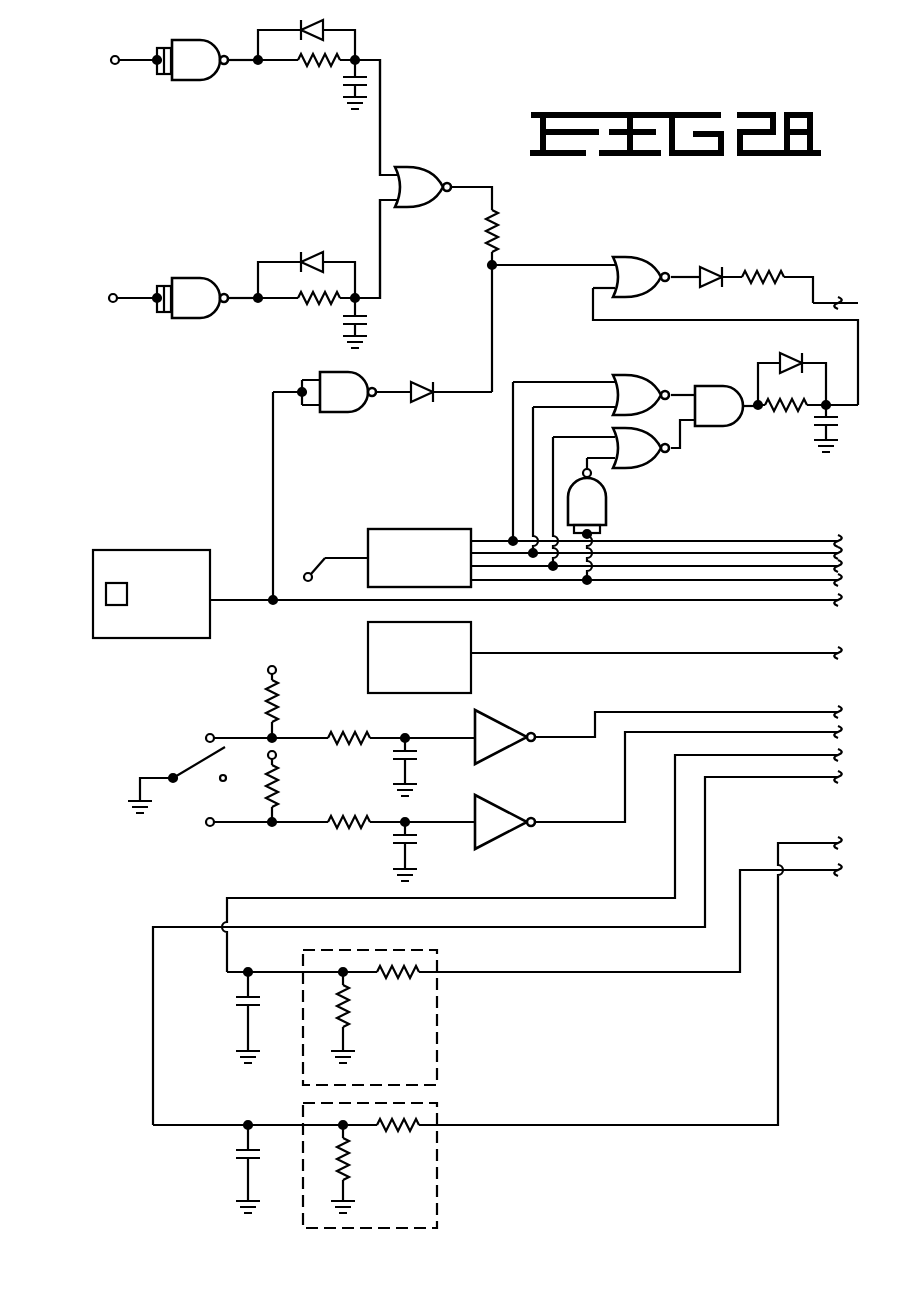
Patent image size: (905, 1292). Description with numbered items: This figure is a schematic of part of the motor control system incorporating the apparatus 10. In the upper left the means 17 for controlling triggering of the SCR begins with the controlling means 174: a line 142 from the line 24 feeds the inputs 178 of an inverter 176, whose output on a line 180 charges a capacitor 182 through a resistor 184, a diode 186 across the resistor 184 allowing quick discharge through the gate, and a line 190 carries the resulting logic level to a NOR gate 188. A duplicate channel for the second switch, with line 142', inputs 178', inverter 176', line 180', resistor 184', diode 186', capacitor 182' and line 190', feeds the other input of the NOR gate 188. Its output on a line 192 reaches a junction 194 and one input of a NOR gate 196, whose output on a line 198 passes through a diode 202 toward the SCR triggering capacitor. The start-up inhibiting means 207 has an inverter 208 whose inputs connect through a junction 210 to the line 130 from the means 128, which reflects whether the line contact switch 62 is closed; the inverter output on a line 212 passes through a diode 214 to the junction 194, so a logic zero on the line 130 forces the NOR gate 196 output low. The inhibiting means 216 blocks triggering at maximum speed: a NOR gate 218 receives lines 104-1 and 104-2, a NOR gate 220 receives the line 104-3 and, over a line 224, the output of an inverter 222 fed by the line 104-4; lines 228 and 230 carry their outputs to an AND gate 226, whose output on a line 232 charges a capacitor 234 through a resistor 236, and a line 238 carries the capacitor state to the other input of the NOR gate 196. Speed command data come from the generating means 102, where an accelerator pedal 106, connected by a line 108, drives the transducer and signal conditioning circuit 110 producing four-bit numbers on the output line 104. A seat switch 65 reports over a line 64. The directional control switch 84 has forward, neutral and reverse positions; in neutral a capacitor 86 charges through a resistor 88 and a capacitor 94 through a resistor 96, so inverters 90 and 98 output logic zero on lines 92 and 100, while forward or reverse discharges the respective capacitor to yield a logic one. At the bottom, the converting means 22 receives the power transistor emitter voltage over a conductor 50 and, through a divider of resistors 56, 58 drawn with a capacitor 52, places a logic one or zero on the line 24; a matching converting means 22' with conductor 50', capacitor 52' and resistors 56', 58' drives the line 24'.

The apparatus 10 is at (502, 96).
The controlling means 174 is at (176, 150).
The line 142 is at (123, 39).
The inputs 178 is at (186, 42).
The inverter 176 is at (221, 45).
The line 180 is at (234, 85).
The resistor 184 is at (339, 51).
The diode 186 is at (339, 34).
The capacitor 182 is at (318, 90).
The line 190 is at (403, 117).
The line 142' is at (123, 278).
The inputs 178' is at (185, 275).
The inverter 176' is at (217, 285).
The output line 180' is at (233, 324).
The resistor 184' is at (306, 321).
The diode 186' is at (306, 253).
The capacitor 182' is at (394, 323).
The line 190' is at (410, 249).
The NOR gate 188 is at (426, 168).
The line 192 is at (494, 190).
The junction 194 is at (494, 264).
The means 17 is at (652, 206).
The NOR gate 196 is at (632, 258).
The line 198 is at (686, 276).
The diode 202 is at (724, 276).
The inhibiting means 216 is at (574, 337).
The NOR gate 218 is at (628, 374).
The line 228 is at (680, 392).
The NOR gate 220 is at (634, 468).
The line 230 is at (682, 452).
The AND gate 226 is at (712, 386).
The line 232 is at (742, 418).
The resistor 236 is at (786, 410).
The line 238 is at (706, 322).
The capacitor 234 is at (831, 434).
The line 224 is at (598, 462).
The inverter 222 is at (605, 529).
The inhibiting means 207 is at (262, 386).
The inverter 208 is at (346, 413).
The line 212 is at (388, 390).
The diode 214 is at (424, 406).
The junction 210 is at (276, 596).
The means 128 is at (152, 534).
The line contact switch 62 is at (118, 583).
The line 130 is at (246, 598).
The generating means 102 is at (415, 524).
The accelerator box or transducer and signal conditioning circuit 110 is at (436, 528).
The accelerator pedal 106 is at (330, 545).
The line 108 is at (350, 556).
The output line 104 is at (713, 541).
The line 104-1 is at (733, 540).
The line 104-2 is at (772, 552).
The line 104-3 is at (745, 568).
The line 104-4 is at (803, 582).
The seat switch 65 is at (472, 629).
The line 64 is at (591, 652).
The directional control switch 84 is at (172, 734).
The resistor 88 is at (353, 735).
The capacitor 86 is at (405, 756).
The resistor 96 is at (346, 820).
The capacitor 94 is at (405, 840).
The inverter 90 is at (500, 718).
The line 92 is at (610, 712).
The inverter 98 is at (506, 808).
The line 100 is at (625, 785).
The line 24 is at (532, 860).
The line 24' is at (467, 948).
The conductor 50 is at (630, 941).
The line 50' is at (630, 1004).
The capacitor 52 is at (226, 1017).
The capacitor 52' is at (219, 1169).
The converting means 22 is at (400, 1017).
The potentiometer unit 22' is at (408, 1165).
The resistor 56 is at (418, 952).
The resistor 56' is at (433, 1109).
The resistor 58 is at (368, 1017).
The resistor 58' is at (371, 1169).